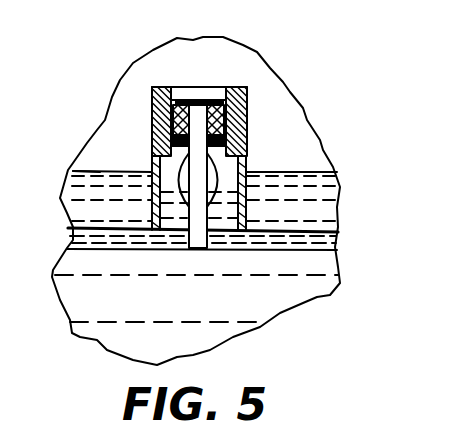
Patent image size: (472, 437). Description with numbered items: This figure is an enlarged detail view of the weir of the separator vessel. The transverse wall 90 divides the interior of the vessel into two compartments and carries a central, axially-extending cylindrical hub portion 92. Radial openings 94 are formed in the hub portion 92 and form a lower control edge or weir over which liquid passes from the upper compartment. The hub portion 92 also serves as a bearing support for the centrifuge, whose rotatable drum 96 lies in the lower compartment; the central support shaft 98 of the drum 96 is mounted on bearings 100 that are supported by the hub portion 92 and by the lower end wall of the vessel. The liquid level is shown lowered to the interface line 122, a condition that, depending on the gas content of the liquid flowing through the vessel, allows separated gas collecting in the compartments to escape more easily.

The transverse wall 90 is at (317, 228).
The cylindrical hub portion 92 is at (250, 106).
The radial openings 94 is at (191, 205).
The rotatable drum 96 is at (62, 320).
The central support shaft 98 is at (205, 227).
The bearings 100 is at (152, 112).
The interface line 122 is at (88, 172).